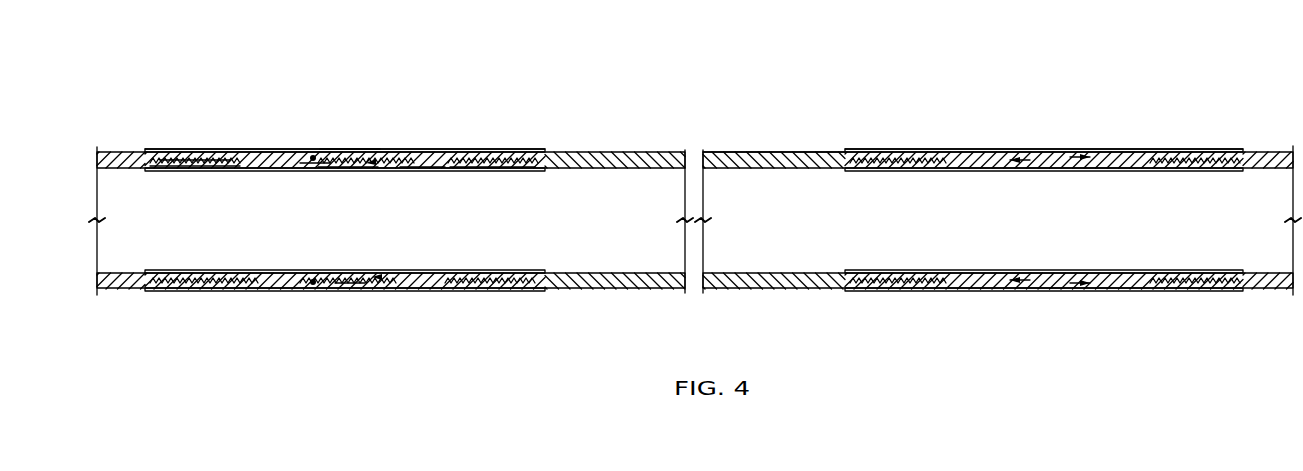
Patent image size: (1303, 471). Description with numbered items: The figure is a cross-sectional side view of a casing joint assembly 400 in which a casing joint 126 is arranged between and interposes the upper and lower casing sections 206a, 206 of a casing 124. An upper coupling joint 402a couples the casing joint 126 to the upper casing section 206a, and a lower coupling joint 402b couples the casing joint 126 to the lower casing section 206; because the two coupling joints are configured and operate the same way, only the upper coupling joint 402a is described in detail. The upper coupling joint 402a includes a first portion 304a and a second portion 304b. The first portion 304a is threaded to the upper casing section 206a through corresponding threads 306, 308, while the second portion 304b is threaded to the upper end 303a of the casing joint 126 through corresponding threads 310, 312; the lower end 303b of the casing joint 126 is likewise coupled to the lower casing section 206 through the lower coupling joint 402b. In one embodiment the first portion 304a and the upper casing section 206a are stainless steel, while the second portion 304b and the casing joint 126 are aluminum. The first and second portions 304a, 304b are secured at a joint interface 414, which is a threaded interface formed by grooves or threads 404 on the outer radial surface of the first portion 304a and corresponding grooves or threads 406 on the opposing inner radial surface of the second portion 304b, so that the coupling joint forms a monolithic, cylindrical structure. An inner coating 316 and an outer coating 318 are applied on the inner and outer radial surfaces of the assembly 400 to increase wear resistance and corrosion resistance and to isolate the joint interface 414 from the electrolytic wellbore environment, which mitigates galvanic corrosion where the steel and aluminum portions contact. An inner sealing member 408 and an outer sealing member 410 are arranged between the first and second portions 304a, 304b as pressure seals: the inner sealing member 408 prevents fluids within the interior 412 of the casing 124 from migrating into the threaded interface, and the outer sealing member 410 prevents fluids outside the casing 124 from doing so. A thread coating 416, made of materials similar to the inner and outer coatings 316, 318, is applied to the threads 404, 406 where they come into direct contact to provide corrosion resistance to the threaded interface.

The casing joint assembly 400 is at (175, 27).
The casing 124 is at (120, 288).
The casing joint 126 is at (731, 152).
The casing sections 206 is at (1275, 156).
The upper casing section 206a is at (108, 152).
The upper end of the casing joint 303a is at (505, 275).
The lower end of the casing joint 303b is at (878, 275).
The first portion 304a is at (240, 170).
The second portion 304b is at (420, 170).
The threads 306 is at (183, 166).
The threads 308 is at (226, 162).
The threads 310 is at (485, 172).
The threads 312 is at (482, 158).
The inner coating 316 is at (530, 172).
The outer coating 318 is at (171, 149).
The upper coupling joint 402a is at (526, 140).
The lower coupling joint 402b is at (864, 140).
The threads 404 is at (335, 158).
The threads 406 is at (333, 170).
The inner sealing member 408 is at (372, 161).
The outer sealing member 410 is at (312, 156).
The interior 412 is at (394, 232).
The joint interface 414 is at (344, 145).
The thread coating 416 is at (315, 166).